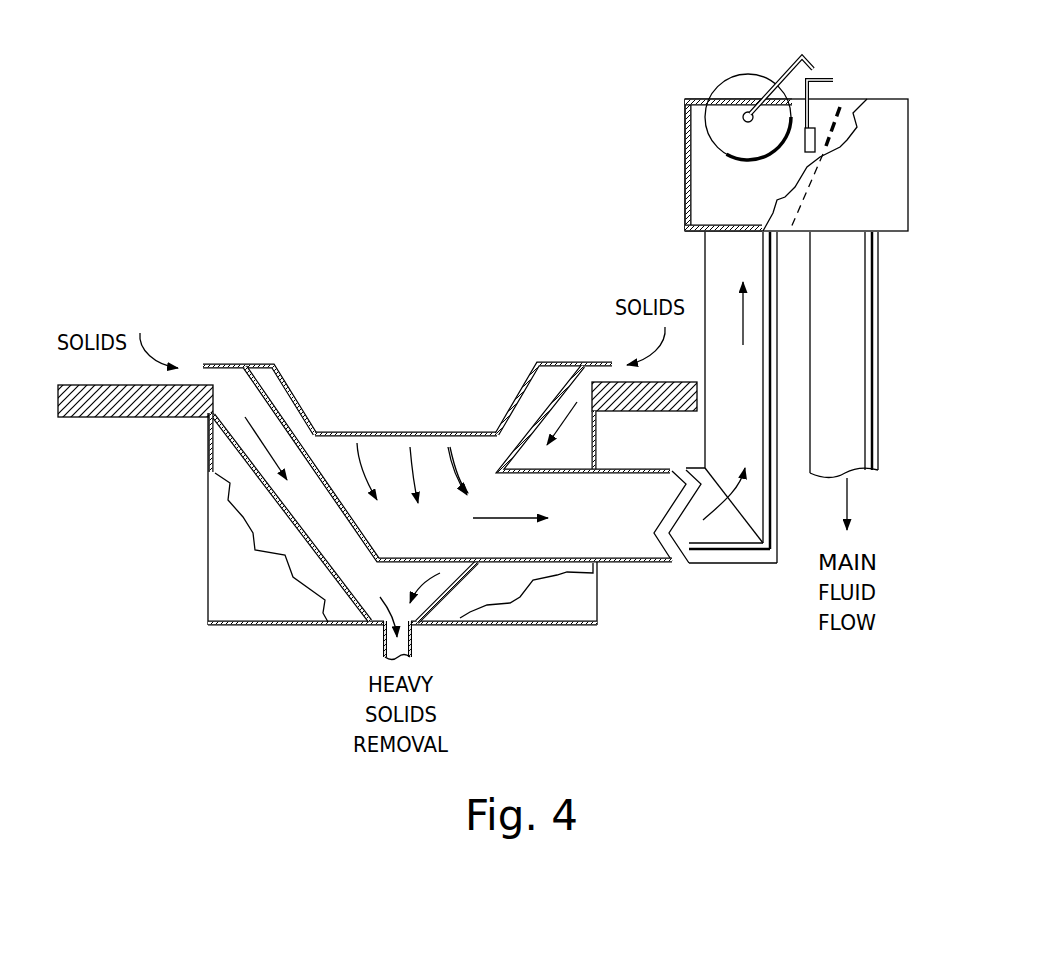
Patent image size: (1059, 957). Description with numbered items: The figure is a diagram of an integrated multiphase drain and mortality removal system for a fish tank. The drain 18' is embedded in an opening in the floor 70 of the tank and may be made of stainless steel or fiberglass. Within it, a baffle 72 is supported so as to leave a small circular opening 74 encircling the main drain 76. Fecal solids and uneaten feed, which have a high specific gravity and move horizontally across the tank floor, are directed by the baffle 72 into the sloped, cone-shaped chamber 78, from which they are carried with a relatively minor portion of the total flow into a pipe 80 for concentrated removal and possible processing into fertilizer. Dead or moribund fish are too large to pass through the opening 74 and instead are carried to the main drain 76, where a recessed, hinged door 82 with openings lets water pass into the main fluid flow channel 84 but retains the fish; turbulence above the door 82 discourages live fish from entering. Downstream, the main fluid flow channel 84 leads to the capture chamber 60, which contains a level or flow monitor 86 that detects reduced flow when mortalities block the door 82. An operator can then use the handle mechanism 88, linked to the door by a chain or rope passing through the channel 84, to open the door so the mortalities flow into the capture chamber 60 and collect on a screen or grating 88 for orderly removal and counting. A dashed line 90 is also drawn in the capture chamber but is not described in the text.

The multiphase drain/sump 18' is at (402, 440).
The capture chamber 60 is at (685, 141).
The floor 70 is at (160, 400).
The baffle 72 is at (220, 367).
The circular opening 74 is at (202, 380).
The main drain 76 is at (505, 375).
The cone-shaped chamber 78 is at (458, 463).
The pipe 80 is at (380, 640).
The door 82 is at (405, 432).
The main fluid flow channel 84 is at (563, 527).
The level or flow monitor 86 is at (817, 133).
The handle mechanism 88 is at (797, 43).
The level indicator line 90 is at (817, 147).